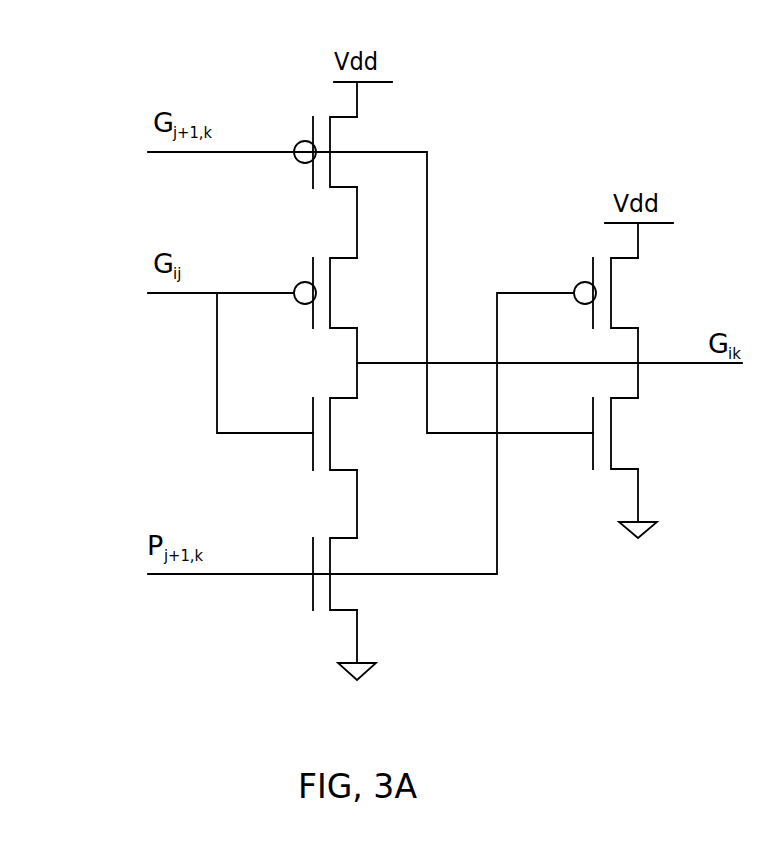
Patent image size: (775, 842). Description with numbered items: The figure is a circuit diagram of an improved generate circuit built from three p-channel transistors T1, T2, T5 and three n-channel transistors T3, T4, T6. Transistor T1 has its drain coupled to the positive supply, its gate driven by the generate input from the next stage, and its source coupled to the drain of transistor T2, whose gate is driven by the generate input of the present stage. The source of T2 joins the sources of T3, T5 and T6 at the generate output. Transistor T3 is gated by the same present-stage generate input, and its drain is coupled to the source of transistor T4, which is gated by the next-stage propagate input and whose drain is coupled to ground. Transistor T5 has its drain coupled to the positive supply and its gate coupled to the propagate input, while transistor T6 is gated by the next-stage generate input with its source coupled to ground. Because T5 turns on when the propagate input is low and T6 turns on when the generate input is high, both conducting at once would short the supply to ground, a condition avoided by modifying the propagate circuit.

The p-channel transistor T1 is at (343, 151).
The p-channel transistor T2 is at (340, 293).
The n-channel transistor T3 is at (350, 434).
The n-channel transistor T4 is at (352, 573).
The p-channel transistor T5 is at (622, 293).
The n-channel transistor T6 is at (631, 433).